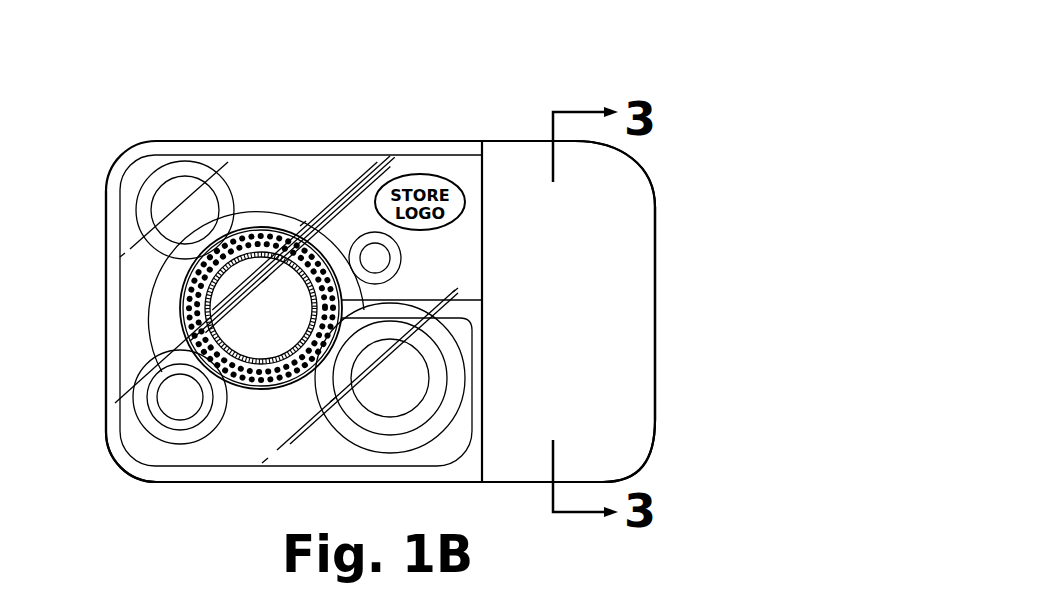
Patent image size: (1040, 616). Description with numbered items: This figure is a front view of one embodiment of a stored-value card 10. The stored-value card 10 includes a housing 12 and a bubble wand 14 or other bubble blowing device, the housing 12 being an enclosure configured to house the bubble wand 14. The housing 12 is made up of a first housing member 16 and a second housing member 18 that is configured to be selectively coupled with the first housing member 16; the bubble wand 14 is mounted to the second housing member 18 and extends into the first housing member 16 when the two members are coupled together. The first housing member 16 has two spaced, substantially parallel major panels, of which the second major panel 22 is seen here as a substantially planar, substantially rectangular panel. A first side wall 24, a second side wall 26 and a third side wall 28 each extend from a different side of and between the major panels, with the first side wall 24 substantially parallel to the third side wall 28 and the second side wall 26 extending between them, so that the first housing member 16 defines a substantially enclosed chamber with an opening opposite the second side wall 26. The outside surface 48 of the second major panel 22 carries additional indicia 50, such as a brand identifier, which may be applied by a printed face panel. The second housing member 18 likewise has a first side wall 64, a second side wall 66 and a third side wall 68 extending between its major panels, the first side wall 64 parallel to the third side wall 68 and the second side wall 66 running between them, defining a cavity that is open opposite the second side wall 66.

The stored-value card 10 is at (630, 60).
The housing 12 is at (630, 200).
The bubble wand 14 is at (467, 310).
The first housing member 16 is at (327, 182).
The second housing member 18 is at (503, 170).
The second major panel 22 is at (108, 302).
The first side wall 24 is at (187, 482).
The second side wall 26 is at (105, 232).
The third side wall 28 is at (283, 141).
The outside surface 48 is at (222, 155).
The additional indicia 50 is at (320, 448).
The first side wall 64 is at (513, 483).
The second side wall 66 is at (657, 380).
The third side wall 68 is at (532, 140).